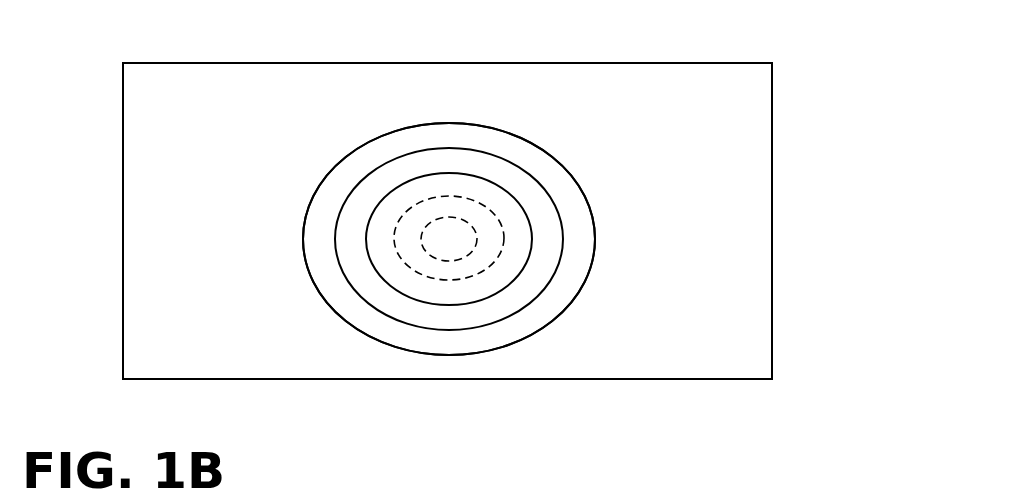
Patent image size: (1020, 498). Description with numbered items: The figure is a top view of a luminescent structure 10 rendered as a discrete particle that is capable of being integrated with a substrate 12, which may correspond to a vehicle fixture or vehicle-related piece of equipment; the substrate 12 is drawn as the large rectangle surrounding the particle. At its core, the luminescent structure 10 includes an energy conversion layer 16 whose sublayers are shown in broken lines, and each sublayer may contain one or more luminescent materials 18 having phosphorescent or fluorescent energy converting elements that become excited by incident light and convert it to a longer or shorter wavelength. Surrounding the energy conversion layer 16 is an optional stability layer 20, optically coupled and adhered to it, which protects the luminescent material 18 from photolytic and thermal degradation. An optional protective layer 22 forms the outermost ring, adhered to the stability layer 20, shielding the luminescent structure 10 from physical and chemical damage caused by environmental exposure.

The luminescent structure 10 is at (352, 133).
The substrate 12 is at (772, 172).
The energy conversion layer 16 is at (507, 288).
The luminescent material 18 is at (435, 255).
The stability layer 20 is at (518, 165).
The protective layer 22 is at (488, 125).